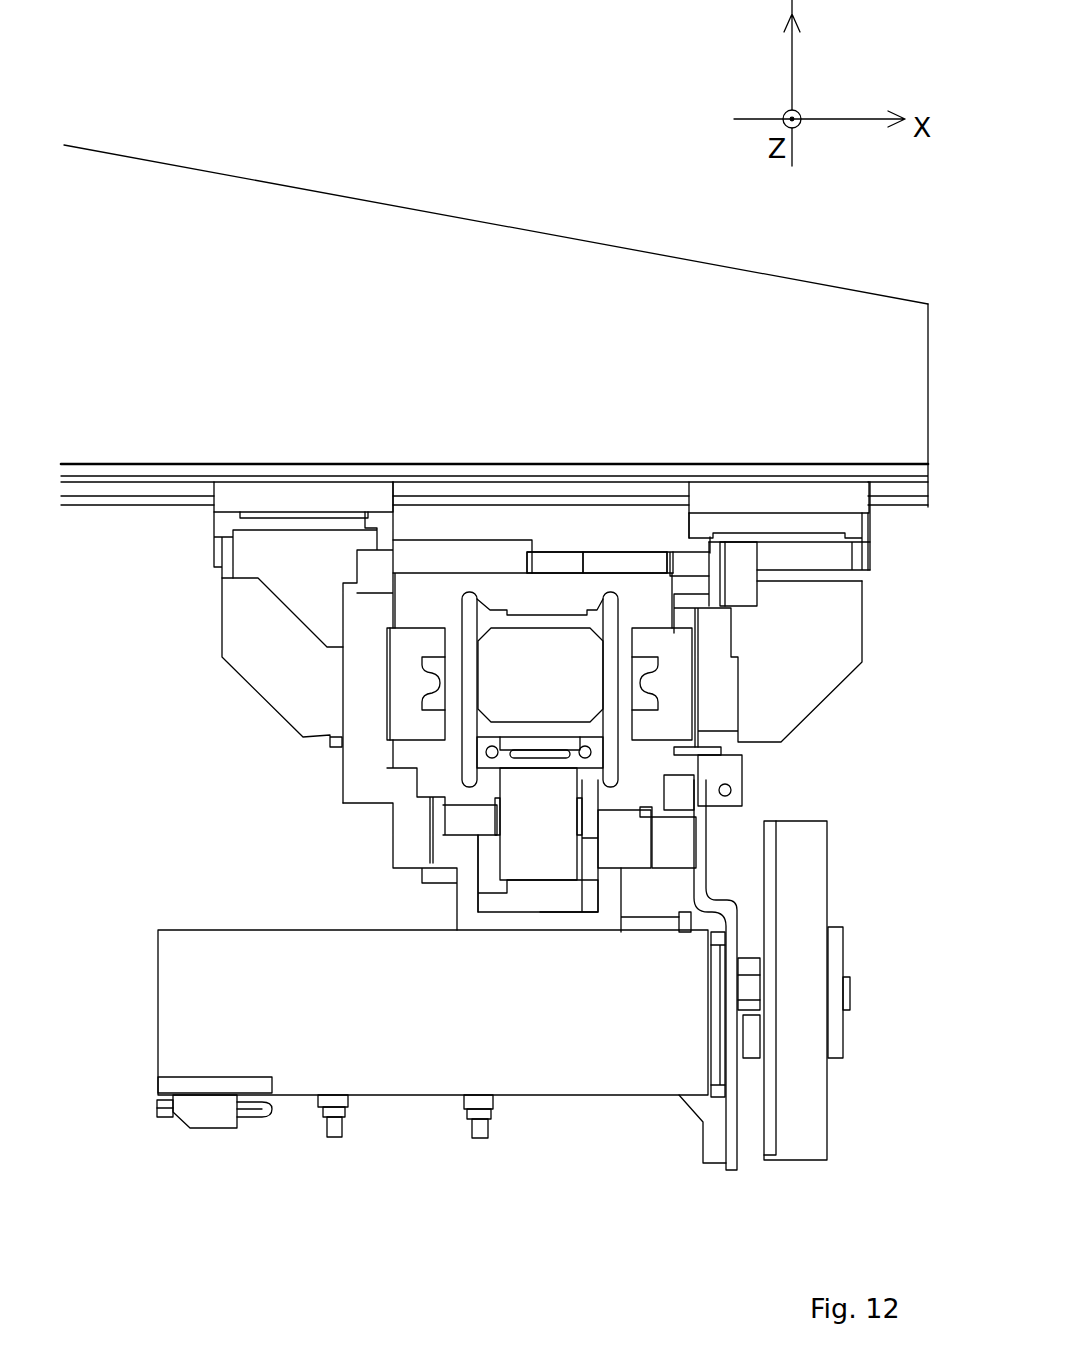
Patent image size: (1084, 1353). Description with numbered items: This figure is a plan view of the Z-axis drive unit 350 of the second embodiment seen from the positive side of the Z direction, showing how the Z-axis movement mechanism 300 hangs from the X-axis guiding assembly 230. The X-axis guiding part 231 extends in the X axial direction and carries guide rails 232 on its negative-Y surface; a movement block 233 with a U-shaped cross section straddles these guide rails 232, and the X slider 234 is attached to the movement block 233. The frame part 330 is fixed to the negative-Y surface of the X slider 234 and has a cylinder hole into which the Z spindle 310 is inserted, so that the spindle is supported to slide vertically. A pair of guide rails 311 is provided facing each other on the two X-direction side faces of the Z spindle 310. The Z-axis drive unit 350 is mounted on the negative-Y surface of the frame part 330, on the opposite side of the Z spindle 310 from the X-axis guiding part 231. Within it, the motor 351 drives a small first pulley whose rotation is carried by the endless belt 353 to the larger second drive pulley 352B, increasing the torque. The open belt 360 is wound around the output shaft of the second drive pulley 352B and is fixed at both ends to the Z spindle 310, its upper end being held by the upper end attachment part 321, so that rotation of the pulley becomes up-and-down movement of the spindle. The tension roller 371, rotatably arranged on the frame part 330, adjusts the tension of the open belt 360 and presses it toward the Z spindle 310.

The rail unit 230 is at (537, 193).
The X-axis guiding part 231 is at (327, 203).
The guide rails 232 is at (913, 490).
The movement block 233 is at (848, 497).
The X slider 234 is at (627, 525).
The Z-axis movement mechanism 300 is at (572, 1166).
The Z spindle 310 is at (545, 620).
The guide rails 311 is at (432, 697).
The upper end attachment part 321 is at (568, 752).
The frame part 330 is at (240, 658).
The Z-axis drive unit 350 is at (494, 981).
The motor 351 is at (385, 1080).
The second drive pulley 352B is at (830, 916).
The endless belt 353 is at (808, 882).
The open belt 360 is at (517, 895).
The tension roller 371 is at (507, 855).